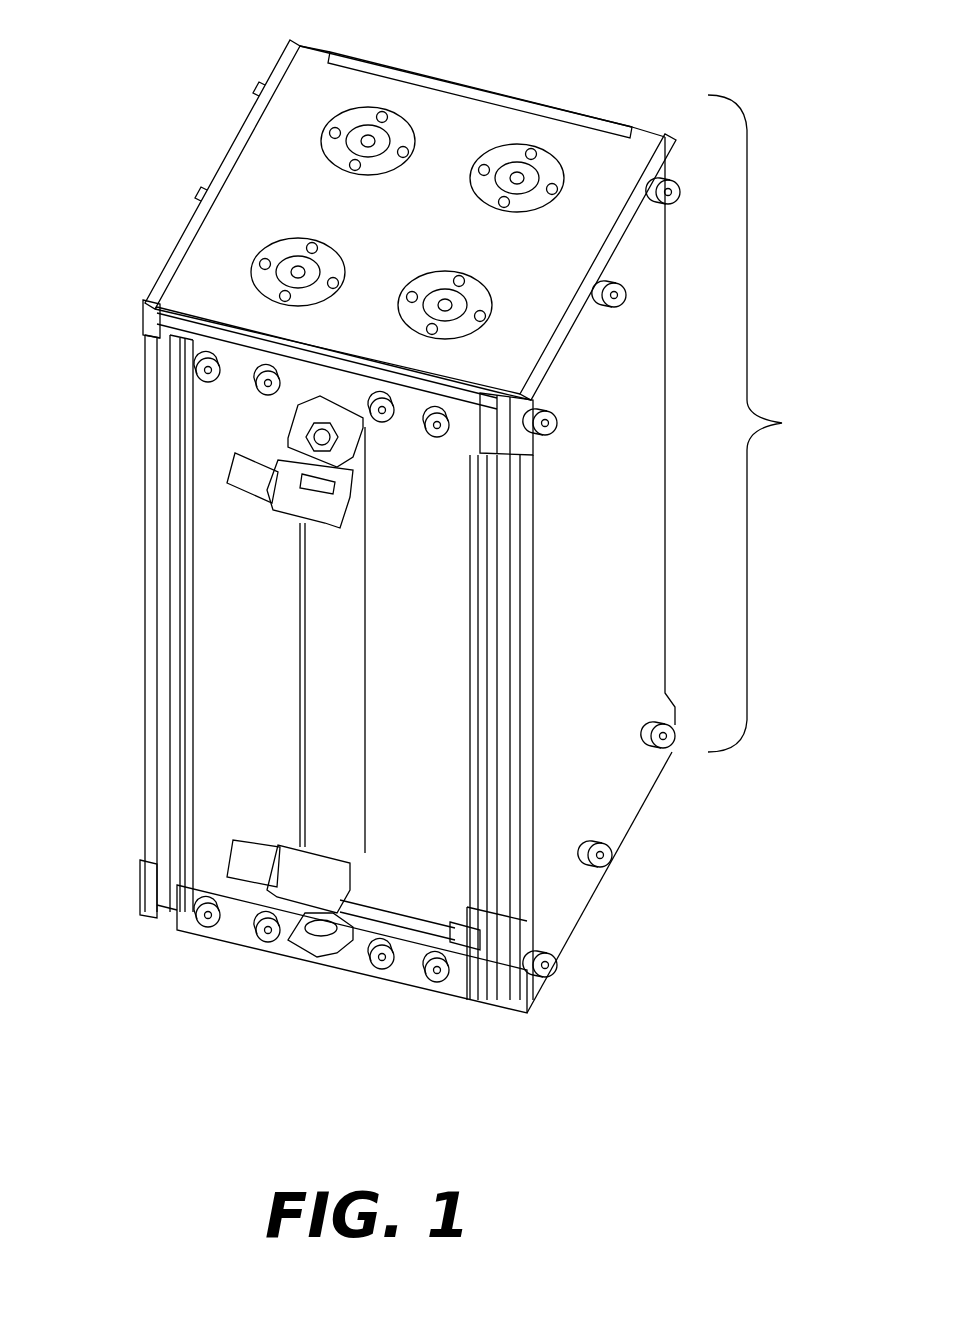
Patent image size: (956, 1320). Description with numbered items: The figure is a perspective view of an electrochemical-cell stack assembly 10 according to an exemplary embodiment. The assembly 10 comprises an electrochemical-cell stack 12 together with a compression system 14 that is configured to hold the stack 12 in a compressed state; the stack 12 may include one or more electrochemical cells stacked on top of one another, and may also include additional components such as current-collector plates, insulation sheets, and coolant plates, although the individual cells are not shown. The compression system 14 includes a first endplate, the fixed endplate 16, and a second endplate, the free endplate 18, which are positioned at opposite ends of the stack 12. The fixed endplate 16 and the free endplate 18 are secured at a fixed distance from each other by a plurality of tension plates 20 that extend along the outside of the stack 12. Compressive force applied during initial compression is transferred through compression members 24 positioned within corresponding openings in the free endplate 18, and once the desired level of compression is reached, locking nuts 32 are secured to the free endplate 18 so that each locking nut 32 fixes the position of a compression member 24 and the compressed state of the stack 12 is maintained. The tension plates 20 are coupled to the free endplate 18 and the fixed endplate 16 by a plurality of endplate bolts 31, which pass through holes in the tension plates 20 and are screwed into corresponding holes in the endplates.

The electrochemical-cell stack assembly 10 is at (118, 130).
The electrochemical-cell stack 12 is at (320, 671).
The compression system 14 is at (763, 423).
The fixed endplate 16 is at (170, 905).
The free endplate 18 is at (318, 52).
The tension plates 20 is at (622, 128).
The compression members 24 is at (420, 110).
The endplate bolts 31 is at (574, 396).
The locking nuts 32 is at (358, 118).